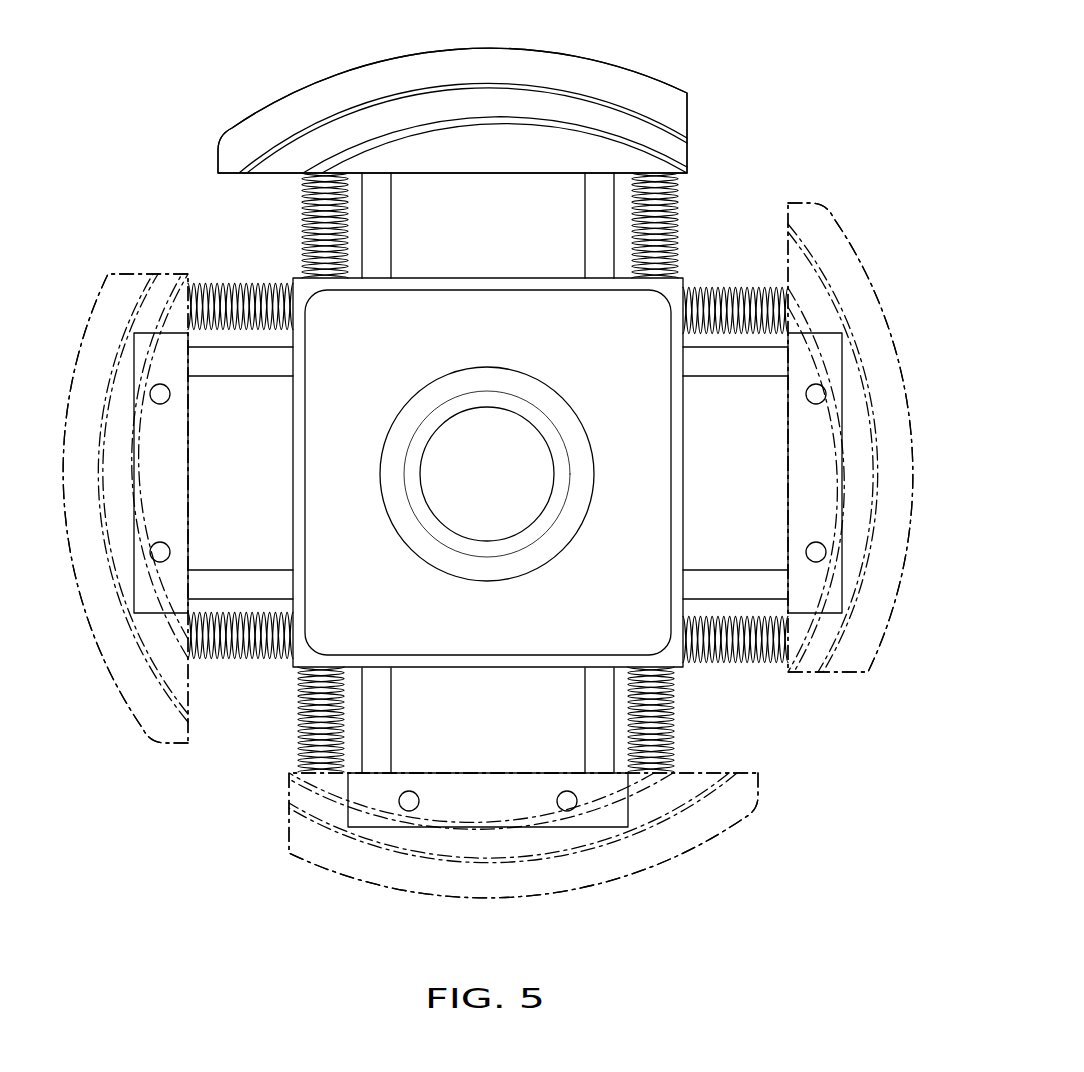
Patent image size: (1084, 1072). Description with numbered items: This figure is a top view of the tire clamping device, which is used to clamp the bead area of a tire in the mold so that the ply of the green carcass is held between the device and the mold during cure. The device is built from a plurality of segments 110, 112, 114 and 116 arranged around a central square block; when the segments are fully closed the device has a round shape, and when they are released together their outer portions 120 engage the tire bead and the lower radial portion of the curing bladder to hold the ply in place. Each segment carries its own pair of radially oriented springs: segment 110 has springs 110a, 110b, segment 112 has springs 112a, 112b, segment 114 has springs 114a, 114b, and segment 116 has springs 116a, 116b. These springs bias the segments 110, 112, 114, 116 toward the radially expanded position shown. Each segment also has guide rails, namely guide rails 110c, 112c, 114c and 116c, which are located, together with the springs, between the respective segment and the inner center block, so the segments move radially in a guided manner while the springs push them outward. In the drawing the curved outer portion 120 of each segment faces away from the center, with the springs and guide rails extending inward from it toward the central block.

The segment 110 is at (893, 418).
The radially oriented spring 110a is at (722, 287).
The radially oriented spring 110b is at (725, 665).
The guide rails 110c is at (735, 378).
The segment 112 is at (597, 870).
The radially oriented spring 112a is at (299, 748).
The radially oriented spring 112b is at (678, 746).
The guide rails 112c is at (389, 722).
The segment 114 is at (110, 635).
The radially oriented spring 114a is at (247, 283).
The radially oriented spring 114b is at (253, 660).
The guide rails 114c is at (240, 376).
The segment 116 is at (472, 52).
The radially oriented spring 116a is at (303, 210).
The radially oriented spring 116b is at (678, 208).
The guide rails 116c is at (393, 226).
The outer portion 120 is at (614, 76).